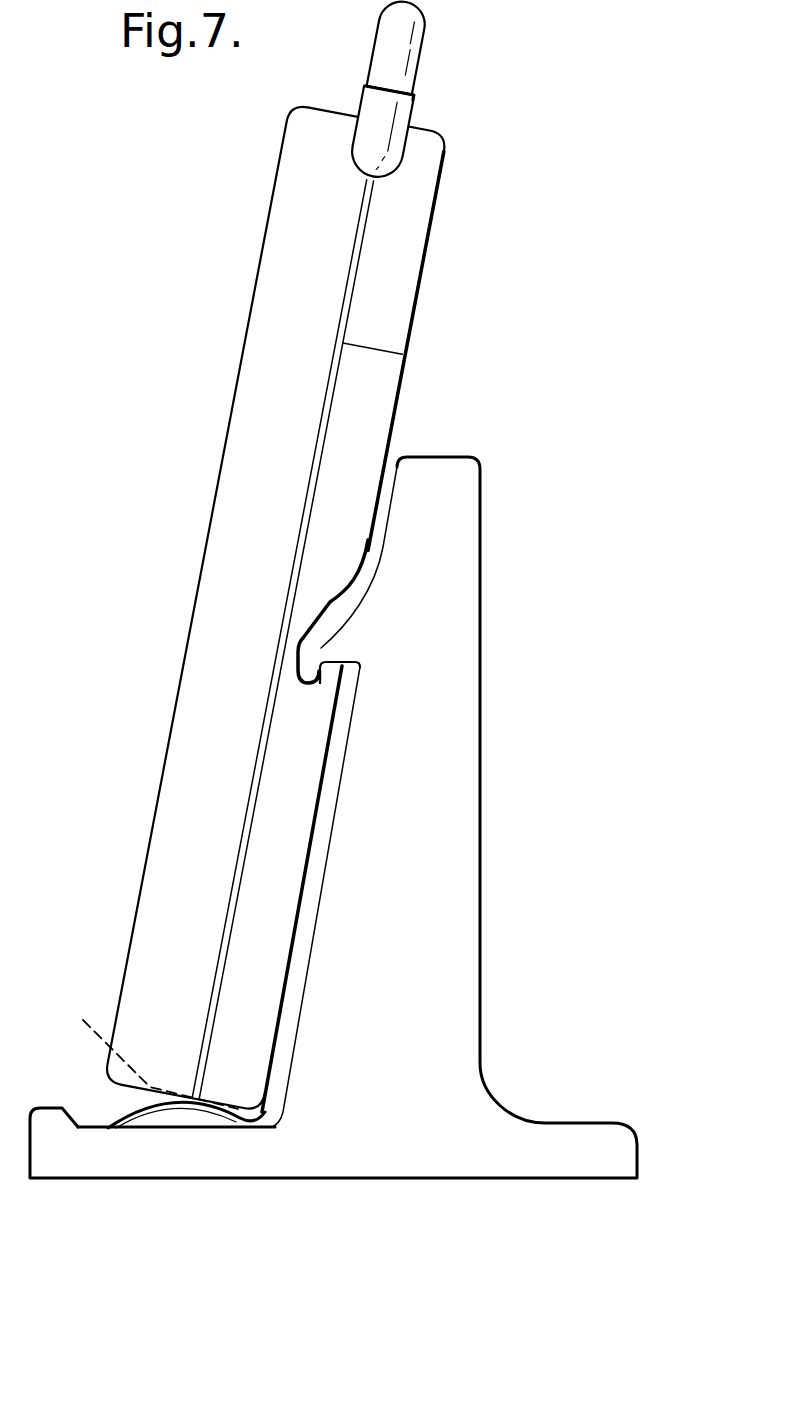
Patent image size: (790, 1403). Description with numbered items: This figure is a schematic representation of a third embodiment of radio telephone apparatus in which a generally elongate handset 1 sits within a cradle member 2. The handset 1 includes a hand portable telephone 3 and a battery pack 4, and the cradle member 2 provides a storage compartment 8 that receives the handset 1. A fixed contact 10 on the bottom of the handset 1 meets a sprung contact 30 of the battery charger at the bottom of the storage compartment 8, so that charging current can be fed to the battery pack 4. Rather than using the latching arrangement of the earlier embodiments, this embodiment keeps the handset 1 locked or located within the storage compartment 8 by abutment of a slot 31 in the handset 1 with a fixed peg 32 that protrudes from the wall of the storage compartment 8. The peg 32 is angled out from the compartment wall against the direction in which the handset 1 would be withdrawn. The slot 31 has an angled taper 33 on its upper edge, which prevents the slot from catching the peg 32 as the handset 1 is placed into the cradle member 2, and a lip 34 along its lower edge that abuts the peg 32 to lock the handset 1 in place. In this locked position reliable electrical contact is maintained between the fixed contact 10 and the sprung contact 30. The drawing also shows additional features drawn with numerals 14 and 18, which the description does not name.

The handset 1 is at (450, 279).
The cradle member 2 is at (497, 1100).
The hand portable telephone 3 is at (340, 395).
The battery pack 4 is at (387, 443).
The storage compartment 8 is at (233, 1127).
The fixed contact 10 is at (143, 1053).
The hook of clip 14 is at (298, 650).
The upright arm of stand 18 is at (322, 893).
The sprung contact 30 is at (127, 1120).
The slot 31 is at (320, 682).
The fixed peg 32 is at (323, 649).
The angled taper 33 is at (342, 582).
The lip 34 is at (363, 668).